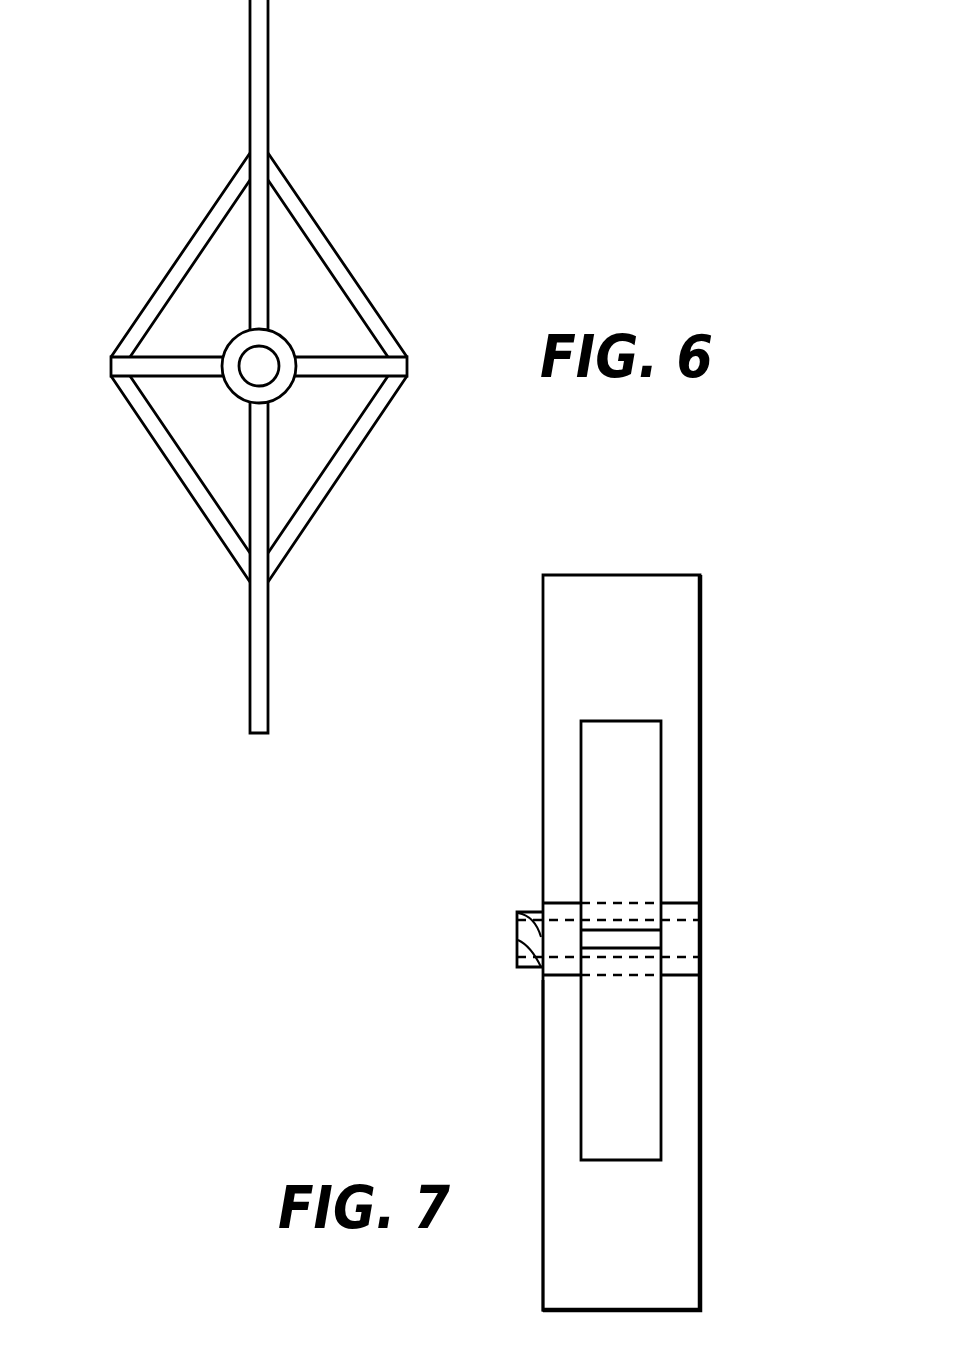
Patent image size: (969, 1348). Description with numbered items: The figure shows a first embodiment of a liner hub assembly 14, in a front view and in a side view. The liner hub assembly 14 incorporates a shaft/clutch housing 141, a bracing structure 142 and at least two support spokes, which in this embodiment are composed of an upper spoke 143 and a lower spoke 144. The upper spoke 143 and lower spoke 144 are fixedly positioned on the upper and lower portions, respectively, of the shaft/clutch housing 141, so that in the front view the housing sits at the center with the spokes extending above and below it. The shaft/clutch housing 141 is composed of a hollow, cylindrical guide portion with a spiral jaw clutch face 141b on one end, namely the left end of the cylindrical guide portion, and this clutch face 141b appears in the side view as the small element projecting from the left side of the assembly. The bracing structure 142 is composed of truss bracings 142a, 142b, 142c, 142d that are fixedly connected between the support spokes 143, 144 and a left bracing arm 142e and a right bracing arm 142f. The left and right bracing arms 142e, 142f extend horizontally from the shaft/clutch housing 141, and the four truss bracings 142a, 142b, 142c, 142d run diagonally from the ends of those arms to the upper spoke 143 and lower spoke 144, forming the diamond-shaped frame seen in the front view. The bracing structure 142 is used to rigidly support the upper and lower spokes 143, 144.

In FIG. 6, the liner hub assembly 14 is at (361, 28).
In FIG. 6, the shaft/clutch housing 141 is at (283, 335).
In FIG. 7, the shaft/clutch housing 141 is at (700, 920).
In FIG. 7, the spiral jaw clutch face 141b is at (540, 935).
In FIG. 6, the bracing structure 142 is at (404, 287).
In FIG. 7, the bracing structure 142 is at (661, 793).
In FIG. 6, the truss bracing 142a is at (213, 207).
In FIG. 6, the truss bracing 142b is at (212, 530).
In FIG. 6, the truss bracing 142c is at (318, 222).
In FIG. 6, the truss bracing 142d is at (315, 517).
In FIG. 6, the left bracing arm 142e is at (165, 367).
In FIG. 6, the right bracing arm 142f is at (345, 367).
In FIG. 6, the upper spoke 143 is at (268, 113).
In FIG. 7, the upper spoke 143 is at (700, 653).
In FIG. 6, the lower spoke 144 is at (268, 698).
In FIG. 7, the lower spoke 144 is at (700, 1256).